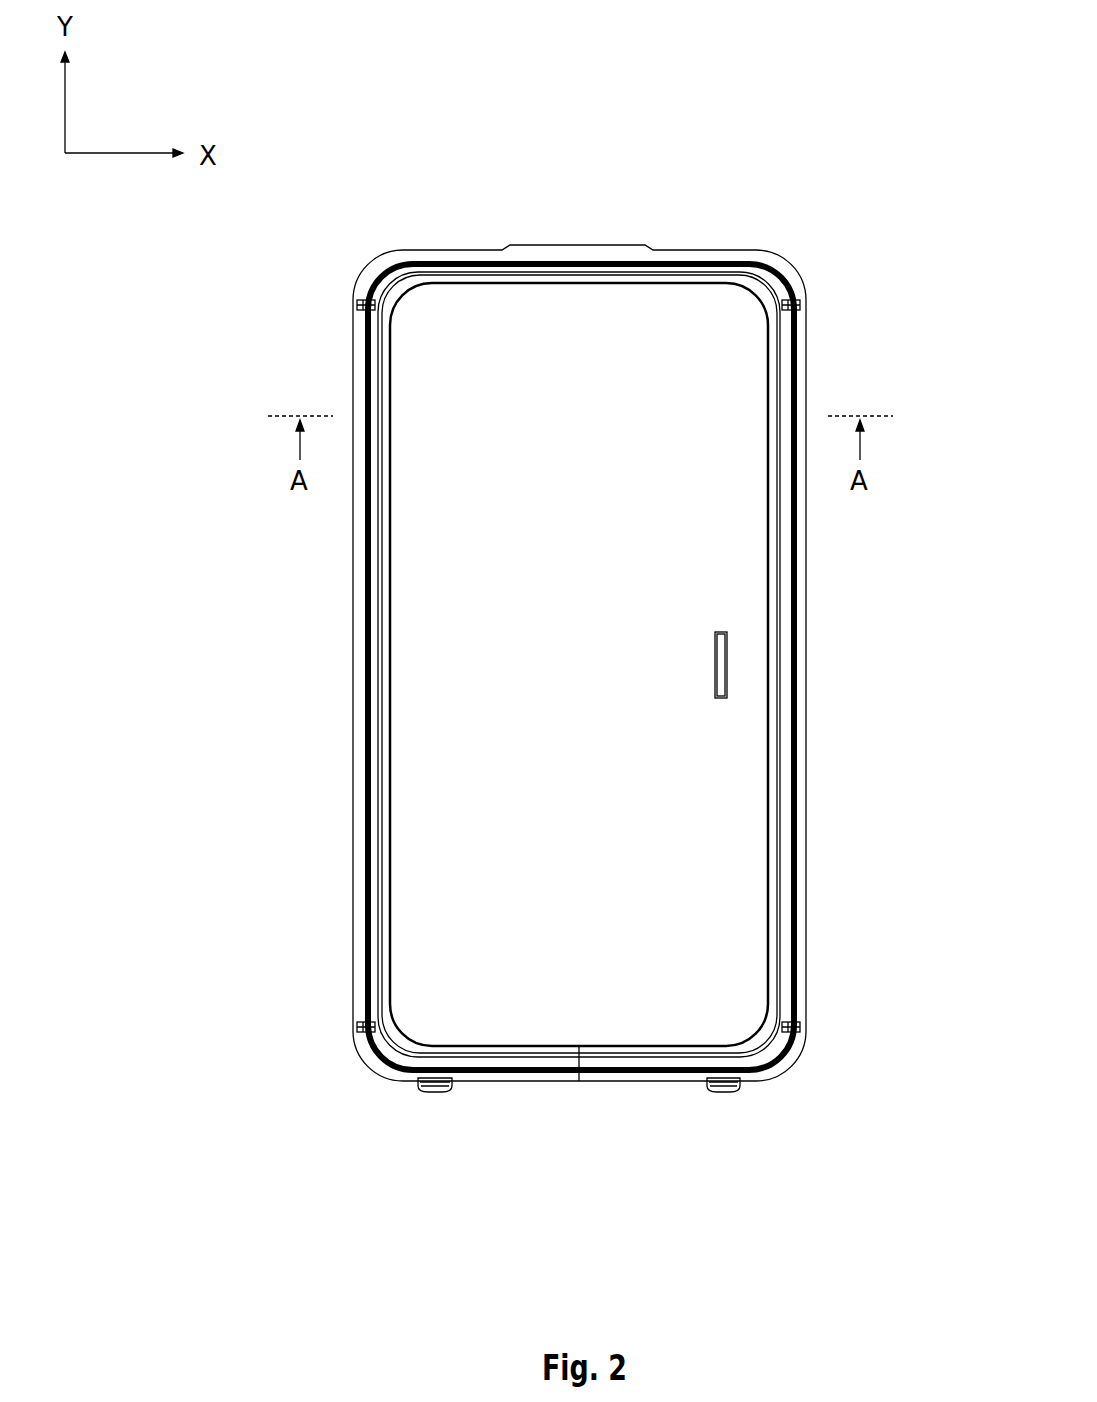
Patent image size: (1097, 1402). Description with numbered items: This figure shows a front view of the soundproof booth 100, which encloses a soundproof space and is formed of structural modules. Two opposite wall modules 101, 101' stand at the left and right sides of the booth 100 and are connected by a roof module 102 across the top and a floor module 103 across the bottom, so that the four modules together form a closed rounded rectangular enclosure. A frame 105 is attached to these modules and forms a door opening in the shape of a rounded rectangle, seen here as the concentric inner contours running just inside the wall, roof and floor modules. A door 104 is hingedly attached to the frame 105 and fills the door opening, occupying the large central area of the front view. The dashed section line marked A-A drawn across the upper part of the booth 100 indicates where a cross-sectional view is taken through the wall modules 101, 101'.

The soundproof booth 100 is at (262, 274).
The wall module 101 is at (885, 667).
The wall module 101' is at (259, 667).
The roof module 102 is at (553, 240).
The floor module 103 is at (596, 1092).
The door 104 is at (537, 612).
The frame 105 is at (787, 847).